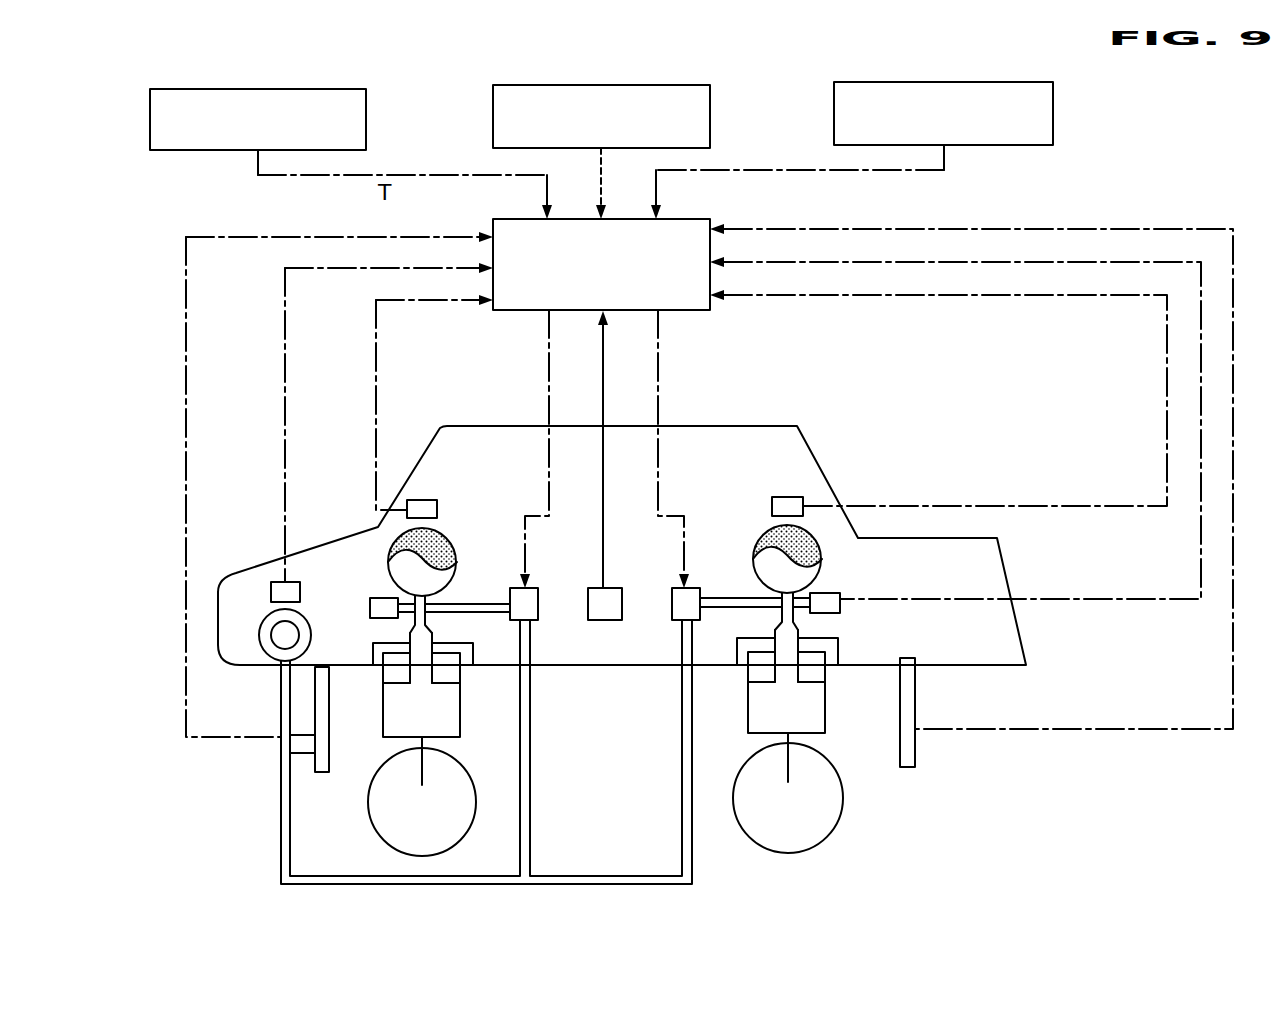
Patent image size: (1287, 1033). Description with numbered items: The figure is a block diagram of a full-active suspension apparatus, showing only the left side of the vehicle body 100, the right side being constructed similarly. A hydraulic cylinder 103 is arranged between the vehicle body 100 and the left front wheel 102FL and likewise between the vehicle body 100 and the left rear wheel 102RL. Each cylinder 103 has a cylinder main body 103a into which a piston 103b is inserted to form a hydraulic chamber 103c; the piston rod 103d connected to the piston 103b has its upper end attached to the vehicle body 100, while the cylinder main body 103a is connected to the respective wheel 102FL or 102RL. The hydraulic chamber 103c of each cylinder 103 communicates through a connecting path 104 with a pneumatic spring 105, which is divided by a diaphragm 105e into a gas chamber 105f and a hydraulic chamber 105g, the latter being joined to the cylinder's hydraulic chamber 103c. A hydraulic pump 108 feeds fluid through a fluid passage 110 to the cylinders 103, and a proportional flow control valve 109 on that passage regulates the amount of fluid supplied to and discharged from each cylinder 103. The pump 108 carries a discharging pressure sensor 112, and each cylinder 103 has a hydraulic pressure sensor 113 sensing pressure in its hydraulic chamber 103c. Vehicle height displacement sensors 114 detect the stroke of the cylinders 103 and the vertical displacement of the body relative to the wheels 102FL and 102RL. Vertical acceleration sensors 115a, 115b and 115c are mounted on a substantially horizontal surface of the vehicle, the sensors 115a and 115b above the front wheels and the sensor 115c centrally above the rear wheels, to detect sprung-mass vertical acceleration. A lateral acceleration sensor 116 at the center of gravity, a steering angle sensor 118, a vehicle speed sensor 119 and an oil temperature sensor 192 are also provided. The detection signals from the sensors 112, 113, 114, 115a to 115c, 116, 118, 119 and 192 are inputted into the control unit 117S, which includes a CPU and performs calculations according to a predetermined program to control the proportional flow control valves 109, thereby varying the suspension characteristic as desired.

The oil temperature sensor 192 is at (322, 89).
The steering angle sensor 118 is at (667, 85).
The vehicle speed sensor 119 is at (1008, 82).
The control unit 117S is at (698, 310).
The vehicle body 100 is at (812, 408).
The vertical acceleration sensor 115a is at (421, 500).
The vertical acceleration sensor 115b is at (448, 456).
The vertical acceleration sensor 115c is at (787, 497).
The pneumatic spring 105 is at (608, 531).
The diaphragm 105e is at (445, 548).
The gas chamber 105f is at (440, 536).
The hydraulic chamber 105g is at (397, 573).
The discharging pressure sensor 112 is at (280, 580).
The hydraulic pressure sensor 113 is at (370, 602).
The connecting path 104 is at (437, 597).
The lateral acceleration sensor 116 is at (607, 588).
The proportional flow control valve 109 is at (540, 622).
The hydraulic pump 108 is at (270, 660).
The fluid passage 110 is at (628, 873).
The vehicle height displacement sensor 114 is at (290, 756).
The hydraulic cylinder 103 is at (612, 717).
The cylinder main body 103a is at (461, 673).
The piston 103b is at (443, 688).
The hydraulic chamber 103c is at (397, 712).
The piston rod 103d is at (378, 663).
The left front wheel 102FL is at (463, 820).
The left rear wheel 102RL is at (835, 818).